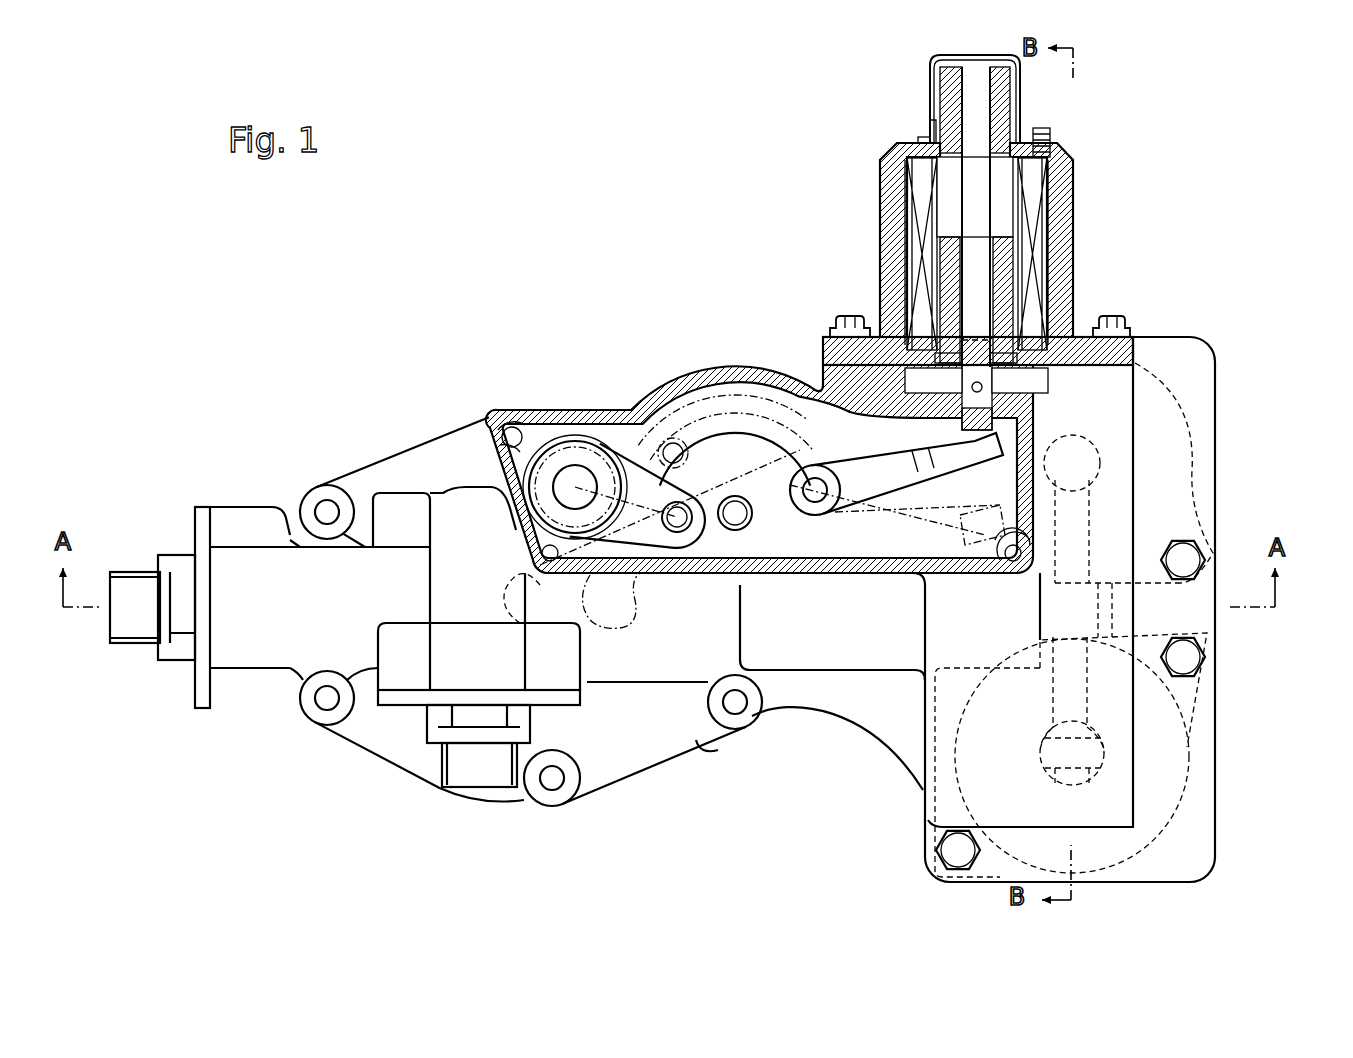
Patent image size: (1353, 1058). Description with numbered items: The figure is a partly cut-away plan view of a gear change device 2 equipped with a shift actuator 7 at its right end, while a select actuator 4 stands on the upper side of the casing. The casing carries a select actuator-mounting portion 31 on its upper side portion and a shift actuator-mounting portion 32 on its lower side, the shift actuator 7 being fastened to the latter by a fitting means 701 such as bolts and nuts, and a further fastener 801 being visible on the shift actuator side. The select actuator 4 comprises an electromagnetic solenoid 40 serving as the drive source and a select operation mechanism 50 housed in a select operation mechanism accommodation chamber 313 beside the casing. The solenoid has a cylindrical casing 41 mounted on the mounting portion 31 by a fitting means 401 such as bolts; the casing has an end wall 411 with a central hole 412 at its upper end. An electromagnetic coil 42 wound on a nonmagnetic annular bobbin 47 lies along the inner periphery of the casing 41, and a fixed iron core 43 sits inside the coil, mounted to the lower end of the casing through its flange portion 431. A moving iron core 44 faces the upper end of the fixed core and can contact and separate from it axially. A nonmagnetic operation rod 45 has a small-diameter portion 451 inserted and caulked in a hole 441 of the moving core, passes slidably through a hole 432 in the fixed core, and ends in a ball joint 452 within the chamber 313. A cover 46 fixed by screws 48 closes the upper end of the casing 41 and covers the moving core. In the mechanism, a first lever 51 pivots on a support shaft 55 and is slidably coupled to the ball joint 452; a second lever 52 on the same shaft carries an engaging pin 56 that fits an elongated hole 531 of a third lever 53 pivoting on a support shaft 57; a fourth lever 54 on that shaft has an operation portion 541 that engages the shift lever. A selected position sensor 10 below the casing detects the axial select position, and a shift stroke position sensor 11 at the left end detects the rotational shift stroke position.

The gear change device 2 is at (697, 220).
The select actuator 4 is at (848, 224).
The shift actuator 7 is at (1242, 745).
The selected position sensor 10 is at (462, 792).
The shift stroke position sensor 11 is at (172, 552).
The select actuator-mounting portion 31 is at (860, 318).
The shift actuator-mounting portion 32 is at (1192, 843).
The electromagnetic solenoid 40 is at (1082, 192).
The cylindrical casing 41 is at (1057, 232).
The electromagnetic coil 42 is at (1060, 205).
The fixed iron core 43 is at (1003, 293).
The moving iron core 44 is at (1007, 110).
The operation rod 45 is at (978, 177).
The cover 46 is at (962, 58).
The annular bobbin 47 is at (923, 203).
The screws 48 is at (1047, 132).
The select operation mechanism 50 is at (755, 420).
The first lever 51 is at (872, 487).
The second lever 52 is at (736, 387).
The third lever 53 is at (563, 442).
The fourth lever 54 is at (543, 570).
The support shaft 55 is at (813, 478).
The engaging pin 56 is at (707, 440).
The support shaft 57 is at (567, 470).
The select operation mechanism accommodation chamber 313 is at (667, 407).
The fitting means 401 is at (1113, 316).
The end wall 411 is at (923, 130).
The hole 412 is at (930, 127).
The flange portion 431 is at (1062, 357).
The hole 432 is at (987, 265).
The hole 441 is at (967, 92).
The small-diameter portion 451 is at (982, 93).
The ball joint 452 is at (997, 473).
The elongated hole 531 is at (660, 478).
The operation portion 541 is at (520, 600).
The fitting means 701 is at (1196, 548).
The bolt 801 is at (1192, 660).